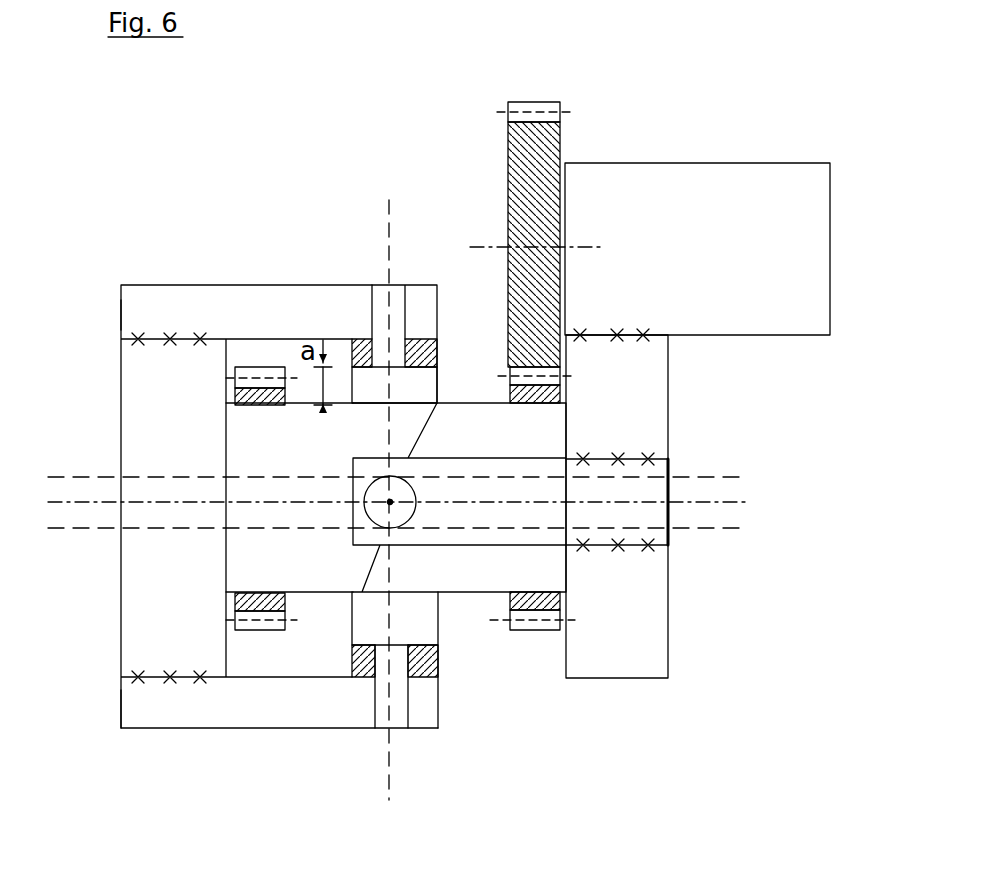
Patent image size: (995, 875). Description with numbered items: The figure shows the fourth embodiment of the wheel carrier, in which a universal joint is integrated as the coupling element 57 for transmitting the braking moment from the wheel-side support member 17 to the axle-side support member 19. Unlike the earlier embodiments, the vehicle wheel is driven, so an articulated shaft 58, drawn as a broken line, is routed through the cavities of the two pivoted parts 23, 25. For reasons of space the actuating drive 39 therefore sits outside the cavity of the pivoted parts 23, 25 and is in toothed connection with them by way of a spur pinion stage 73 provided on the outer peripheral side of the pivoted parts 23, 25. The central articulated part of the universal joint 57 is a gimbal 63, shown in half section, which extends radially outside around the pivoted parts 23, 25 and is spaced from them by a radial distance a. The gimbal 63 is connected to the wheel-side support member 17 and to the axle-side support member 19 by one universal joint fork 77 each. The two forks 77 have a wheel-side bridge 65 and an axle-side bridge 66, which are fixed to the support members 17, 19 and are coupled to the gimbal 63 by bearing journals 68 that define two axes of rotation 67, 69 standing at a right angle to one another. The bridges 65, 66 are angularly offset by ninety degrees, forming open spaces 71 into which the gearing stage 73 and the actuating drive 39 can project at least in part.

The wheel-side support member 17 is at (193, 437).
The axle-side support member 19 is at (623, 413).
The pivoted part 23 is at (298, 457).
The pivoted part 25 is at (518, 451).
The actuating drive 39 is at (728, 252).
The coupling element 57 is at (338, 263).
The articulated shaft 58 is at (731, 529).
The gimbal 63 is at (438, 625).
The wheel-side bridge 65 is at (121, 314).
The axle-side bridge 66 is at (670, 490).
The axis of rotation 67 is at (391, 252).
The bearing journal 68 is at (372, 292).
The axis of rotation 69 is at (390, 502).
The open space 71 is at (451, 382).
The spur pinion stage 73 is at (497, 376).
The universal joint fork 77 is at (157, 280).